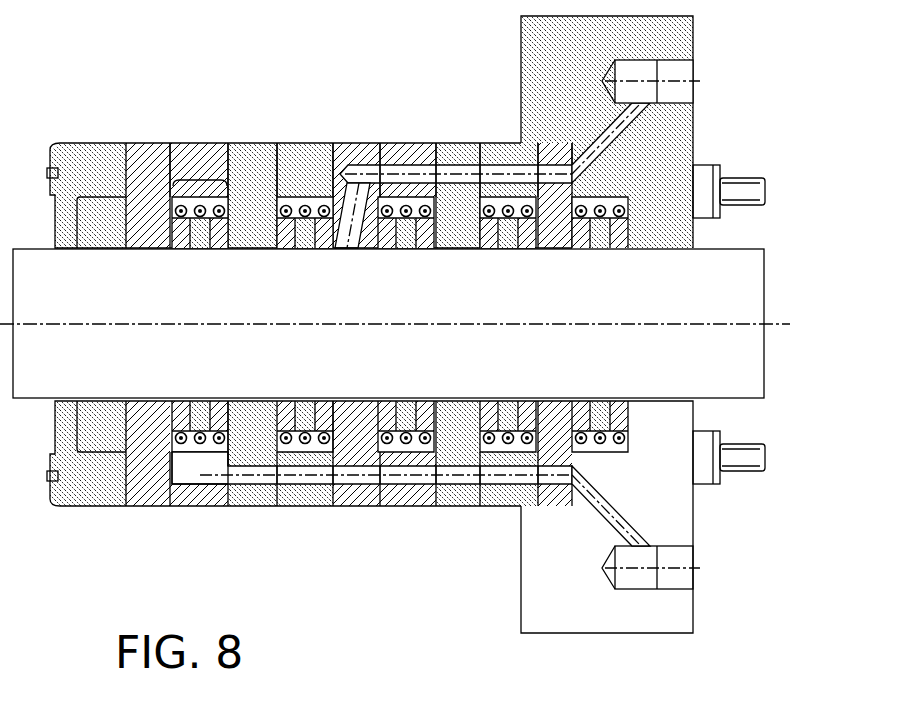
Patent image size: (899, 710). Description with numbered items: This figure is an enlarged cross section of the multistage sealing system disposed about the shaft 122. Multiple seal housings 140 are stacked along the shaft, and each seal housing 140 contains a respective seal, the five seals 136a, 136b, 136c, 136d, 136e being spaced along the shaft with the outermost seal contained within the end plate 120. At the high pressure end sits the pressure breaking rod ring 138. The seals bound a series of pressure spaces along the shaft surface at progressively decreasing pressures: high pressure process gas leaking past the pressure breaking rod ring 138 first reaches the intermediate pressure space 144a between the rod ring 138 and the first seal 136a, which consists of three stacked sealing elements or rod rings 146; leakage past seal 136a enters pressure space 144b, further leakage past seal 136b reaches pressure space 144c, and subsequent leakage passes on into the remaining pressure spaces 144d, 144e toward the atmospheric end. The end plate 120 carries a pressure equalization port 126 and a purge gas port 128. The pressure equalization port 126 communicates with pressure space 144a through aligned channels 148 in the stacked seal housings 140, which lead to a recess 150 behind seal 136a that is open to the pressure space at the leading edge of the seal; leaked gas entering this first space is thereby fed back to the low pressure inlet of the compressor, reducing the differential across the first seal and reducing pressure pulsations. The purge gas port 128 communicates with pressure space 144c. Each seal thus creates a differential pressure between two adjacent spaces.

The end plate 120 is at (695, 428).
The shaft 122 is at (763, 252).
The pressure equalization port 126 is at (697, 577).
The purge gas port 128 is at (697, 72).
The first seal 136a is at (200, 180).
The second seal 136b is at (307, 206).
The seal 136c is at (398, 204).
The seal 136d is at (513, 204).
The seal 136e is at (610, 204).
The pressure breaking rod ring 138 is at (90, 203).
The seal housing 140 is at (155, 508).
The intermediate pressure space 144a is at (152, 247).
The pressure space 144b is at (250, 247).
The pressure space 144c is at (363, 248).
The pressure space 144d is at (458, 248).
The pressure space 144e is at (557, 248).
The rod rings 146 is at (622, 250).
The aligned channels 148 is at (360, 484).
The recess 150 is at (198, 478).